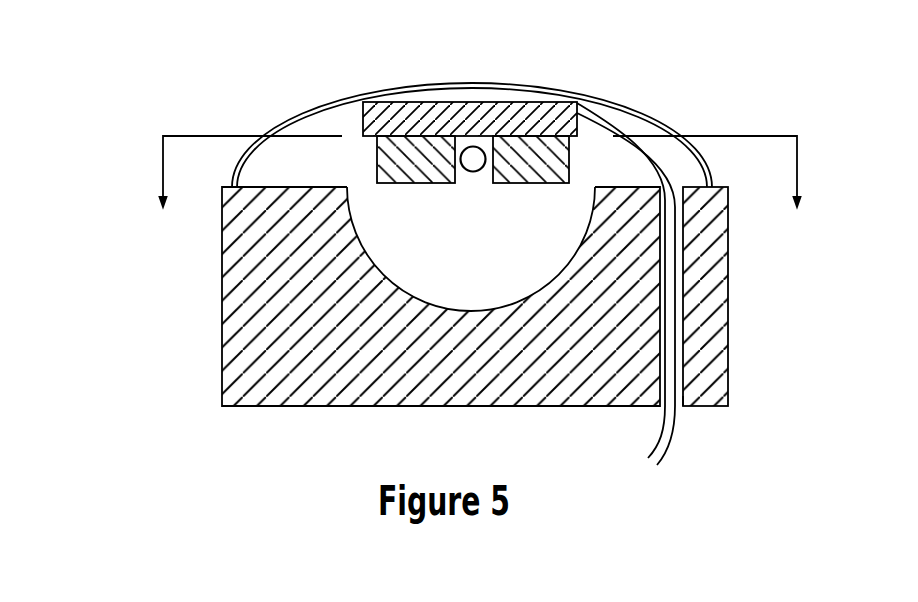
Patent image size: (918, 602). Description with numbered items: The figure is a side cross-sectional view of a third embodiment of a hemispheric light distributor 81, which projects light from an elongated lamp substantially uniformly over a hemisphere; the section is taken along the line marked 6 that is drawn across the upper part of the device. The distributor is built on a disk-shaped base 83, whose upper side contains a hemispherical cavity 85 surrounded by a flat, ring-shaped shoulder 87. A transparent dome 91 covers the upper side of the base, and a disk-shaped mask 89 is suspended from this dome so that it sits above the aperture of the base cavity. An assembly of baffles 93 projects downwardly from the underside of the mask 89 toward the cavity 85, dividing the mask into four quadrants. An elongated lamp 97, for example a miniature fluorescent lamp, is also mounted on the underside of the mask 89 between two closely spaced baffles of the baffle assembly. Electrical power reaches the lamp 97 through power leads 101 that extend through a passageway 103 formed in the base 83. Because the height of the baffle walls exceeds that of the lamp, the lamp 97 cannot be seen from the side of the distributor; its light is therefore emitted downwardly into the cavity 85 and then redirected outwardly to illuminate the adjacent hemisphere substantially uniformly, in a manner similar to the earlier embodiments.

The section line 6- 6 is at (479, 187).
The hemispheric light distributor 81 is at (123, 128).
The disk-shaped base 83 is at (730, 318).
The hemispherical cavity 85 is at (485, 276).
The ring-shaped shoulder 87 is at (697, 186).
The disk-shaped mask 89 is at (407, 102).
The transparent dome 91 is at (303, 113).
The baffles 93 is at (395, 158).
The elongated lamp 97 is at (467, 146).
The power leads 101 is at (677, 445).
The passageway 103 is at (683, 407).